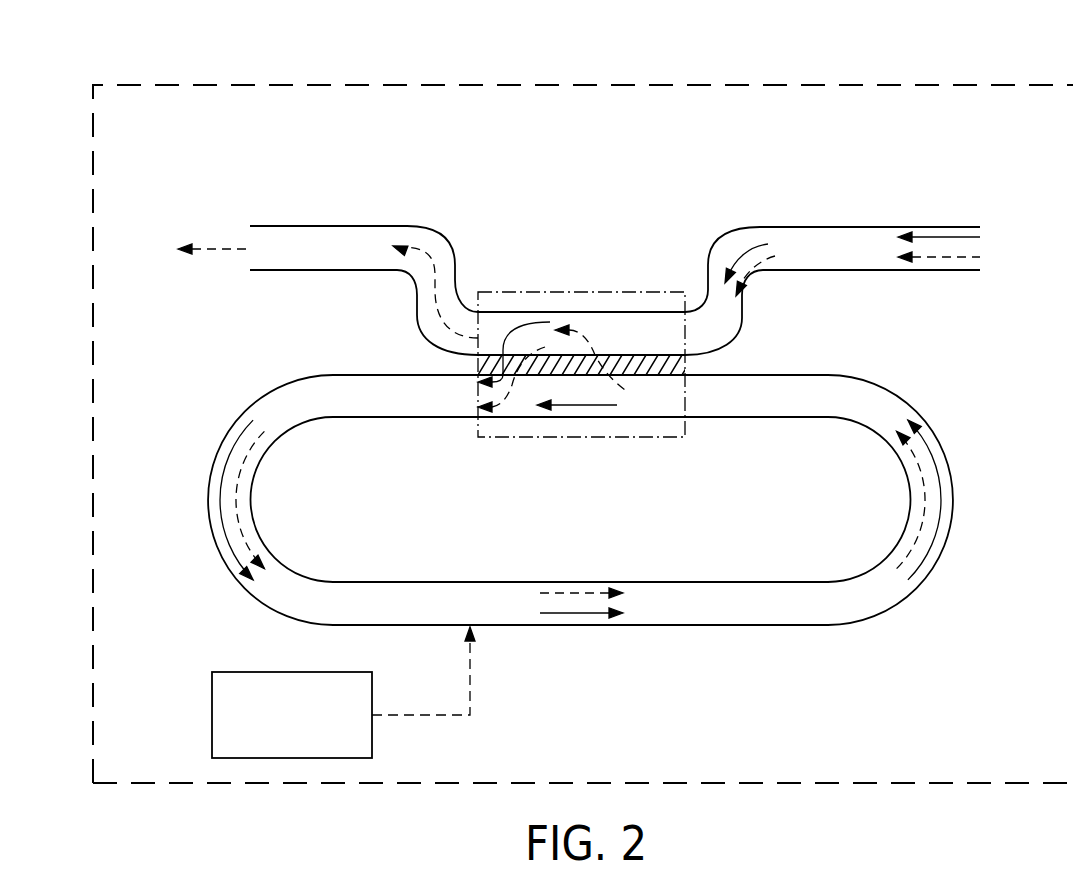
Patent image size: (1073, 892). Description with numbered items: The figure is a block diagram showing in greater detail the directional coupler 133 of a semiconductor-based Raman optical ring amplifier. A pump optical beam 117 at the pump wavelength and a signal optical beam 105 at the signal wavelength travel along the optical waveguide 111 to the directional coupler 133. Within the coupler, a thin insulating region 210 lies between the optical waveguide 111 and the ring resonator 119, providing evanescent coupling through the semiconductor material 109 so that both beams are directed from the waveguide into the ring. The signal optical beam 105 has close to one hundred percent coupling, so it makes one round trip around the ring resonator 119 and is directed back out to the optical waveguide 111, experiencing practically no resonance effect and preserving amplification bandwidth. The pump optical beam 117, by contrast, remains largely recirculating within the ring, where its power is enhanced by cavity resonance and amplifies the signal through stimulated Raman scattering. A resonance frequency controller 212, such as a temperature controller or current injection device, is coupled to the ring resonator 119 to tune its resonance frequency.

The signal optical beam 105 is at (217, 249).
The semiconductor material 109 is at (972, 92).
The optical waveguide 111 is at (808, 227).
The pump optical beam 117 is at (963, 229).
The ring resonator 119 is at (783, 626).
The directional coupler 133 is at (542, 291).
The thin insulating region 210 is at (685, 362).
The resonance frequency controller 212 is at (212, 712).